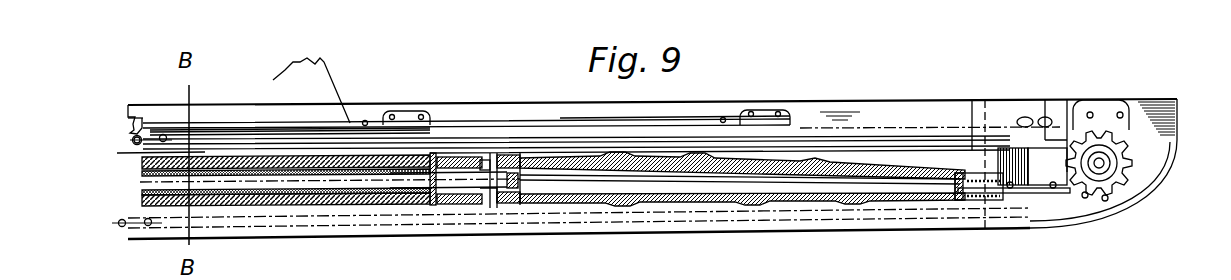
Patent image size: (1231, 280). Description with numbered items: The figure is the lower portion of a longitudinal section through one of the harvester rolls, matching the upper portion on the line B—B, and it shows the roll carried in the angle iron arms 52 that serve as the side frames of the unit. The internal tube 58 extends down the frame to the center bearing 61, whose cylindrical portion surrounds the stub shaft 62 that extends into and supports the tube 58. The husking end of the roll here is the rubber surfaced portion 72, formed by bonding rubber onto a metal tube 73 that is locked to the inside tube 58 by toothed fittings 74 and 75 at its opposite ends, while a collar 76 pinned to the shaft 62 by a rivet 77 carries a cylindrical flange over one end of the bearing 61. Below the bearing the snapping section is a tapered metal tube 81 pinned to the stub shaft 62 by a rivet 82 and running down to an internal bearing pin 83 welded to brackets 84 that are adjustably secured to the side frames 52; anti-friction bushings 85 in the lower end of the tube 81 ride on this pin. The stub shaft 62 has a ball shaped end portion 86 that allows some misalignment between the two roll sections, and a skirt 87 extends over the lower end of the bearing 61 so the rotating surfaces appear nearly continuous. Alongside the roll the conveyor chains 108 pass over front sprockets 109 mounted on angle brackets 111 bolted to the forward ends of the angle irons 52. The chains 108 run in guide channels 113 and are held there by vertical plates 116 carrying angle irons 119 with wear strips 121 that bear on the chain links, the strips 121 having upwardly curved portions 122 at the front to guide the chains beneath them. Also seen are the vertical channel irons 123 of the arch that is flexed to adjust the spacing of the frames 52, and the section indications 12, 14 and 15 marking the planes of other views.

The section line 12 is at (117, 206).
The section line 14 is at (475, 107).
The section line 15 is at (763, 95).
The angle iron arms 52 is at (118, 158).
The internal tube 58 is at (342, 197).
The center bearing 61 is at (480, 203).
The stub shaft 62 is at (397, 175).
The rubber surfaced portion 72 is at (252, 157).
The metal tube 73 is at (282, 195).
The toothed fitting 74 is at (229, 200).
The toothed fitting 75 is at (417, 200).
The collar 76 is at (456, 160).
The rivet 77 is at (435, 200).
The tapered metal tube 81 is at (803, 198).
The rivet 82 is at (513, 158).
The internal bearing pin 83 is at (967, 198).
The brackets 84 is at (1037, 205).
The anti-friction bushings 85 is at (993, 200).
The ball shaped end portion 86 is at (525, 203).
The skirt 87 is at (488, 157).
The conveyor chains 108 is at (142, 118).
The front sprockets 109 is at (1098, 195).
The angle brackets 111 is at (1058, 107).
The channels 113 is at (672, 140).
The vertical plates 116 is at (850, 110).
The angle irons 119 is at (588, 123).
The wear strips 121 is at (207, 136).
The upwardly curved portions 122 is at (778, 116).
The vertical channel irons 123 is at (330, 64).